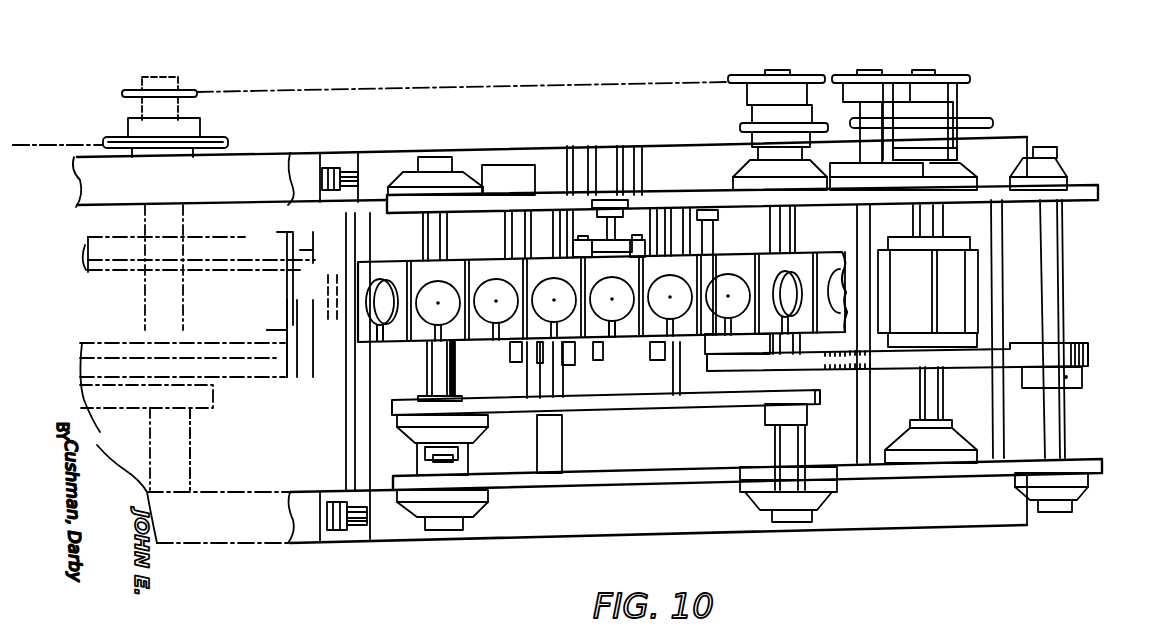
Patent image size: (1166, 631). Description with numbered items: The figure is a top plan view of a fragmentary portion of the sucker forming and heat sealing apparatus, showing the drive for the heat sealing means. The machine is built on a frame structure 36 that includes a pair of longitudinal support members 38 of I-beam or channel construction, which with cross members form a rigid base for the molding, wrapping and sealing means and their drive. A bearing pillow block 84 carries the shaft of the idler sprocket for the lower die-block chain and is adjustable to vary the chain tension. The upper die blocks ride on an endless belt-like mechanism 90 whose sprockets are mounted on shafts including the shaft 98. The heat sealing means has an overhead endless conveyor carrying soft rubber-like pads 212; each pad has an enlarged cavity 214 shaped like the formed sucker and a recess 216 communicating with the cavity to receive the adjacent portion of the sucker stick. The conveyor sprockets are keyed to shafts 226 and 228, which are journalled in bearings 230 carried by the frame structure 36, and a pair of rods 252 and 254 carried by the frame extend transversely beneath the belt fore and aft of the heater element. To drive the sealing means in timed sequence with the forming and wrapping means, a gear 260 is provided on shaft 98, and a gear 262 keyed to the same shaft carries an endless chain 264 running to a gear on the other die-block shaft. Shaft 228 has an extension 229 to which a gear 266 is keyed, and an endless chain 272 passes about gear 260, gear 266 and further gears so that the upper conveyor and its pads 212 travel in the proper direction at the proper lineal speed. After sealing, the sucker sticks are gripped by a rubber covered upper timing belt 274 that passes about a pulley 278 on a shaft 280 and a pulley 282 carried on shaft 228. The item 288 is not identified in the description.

The frame structure 36 is at (440, 110).
The longitudinal support members 38 is at (520, 148).
The bearing pillow block 84 is at (323, 157).
The endless belt-like mechanism 90 is at (252, 377).
The shaft 98 is at (192, 463).
The rubber-like pads 212 is at (392, 245).
The cavity 214 is at (570, 265).
The recess 216 is at (378, 343).
The shaft 226 is at (455, 378).
The shaft 228 is at (798, 233).
The extension 229 is at (777, 72).
The bearings 230 is at (390, 187).
The rod 252 is at (510, 355).
The rod 254 is at (715, 252).
The gear 260 is at (193, 93).
The gear 262 is at (227, 142).
The endless chain 264 is at (83, 142).
The gear 266 is at (727, 85).
The endless chain 272 is at (650, 62).
The upper timing belt 274 is at (977, 368).
The pulley 278 is at (1088, 370).
The shaft 280 is at (1067, 427).
The pulley 282 is at (845, 380).
The motor housing 288 is at (948, 238).